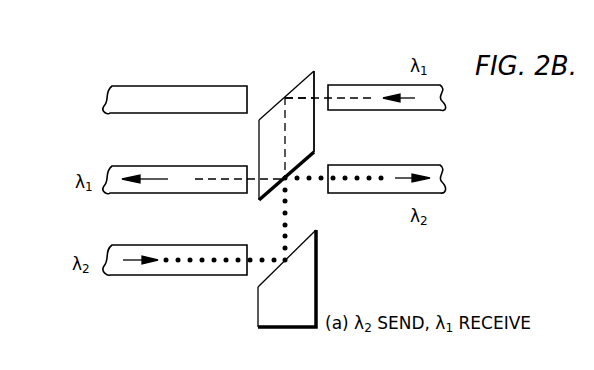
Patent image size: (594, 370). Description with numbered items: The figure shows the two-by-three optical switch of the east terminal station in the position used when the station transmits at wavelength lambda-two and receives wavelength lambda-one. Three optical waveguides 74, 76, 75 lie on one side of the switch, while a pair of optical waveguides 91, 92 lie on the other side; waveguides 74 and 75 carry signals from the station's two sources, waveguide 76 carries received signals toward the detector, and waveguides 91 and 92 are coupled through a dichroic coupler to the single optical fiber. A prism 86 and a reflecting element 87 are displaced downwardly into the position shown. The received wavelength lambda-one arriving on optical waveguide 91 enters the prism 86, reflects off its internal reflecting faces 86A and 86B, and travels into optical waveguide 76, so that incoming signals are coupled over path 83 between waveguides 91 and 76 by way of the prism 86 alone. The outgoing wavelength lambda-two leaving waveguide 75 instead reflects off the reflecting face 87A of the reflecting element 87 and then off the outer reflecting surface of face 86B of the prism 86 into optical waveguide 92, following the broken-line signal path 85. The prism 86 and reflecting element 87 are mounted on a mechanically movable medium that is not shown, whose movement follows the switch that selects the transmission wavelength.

The optical waveguide 74 is at (197, 86).
The optical waveguide 76 is at (206, 166).
The optical waveguide 75 is at (195, 245).
The optical waveguide 91 is at (372, 85).
The optical waveguide 92 is at (360, 193).
The signal path 85 is at (283, 211).
The prism 86 is at (293, 125).
The internal reflecting face 86A is at (273, 108).
The internal reflecting face 86B is at (308, 158).
The path 83 is at (285, 132).
The reflecting element 87 is at (311, 261).
The reflecting face 87A is at (311, 233).